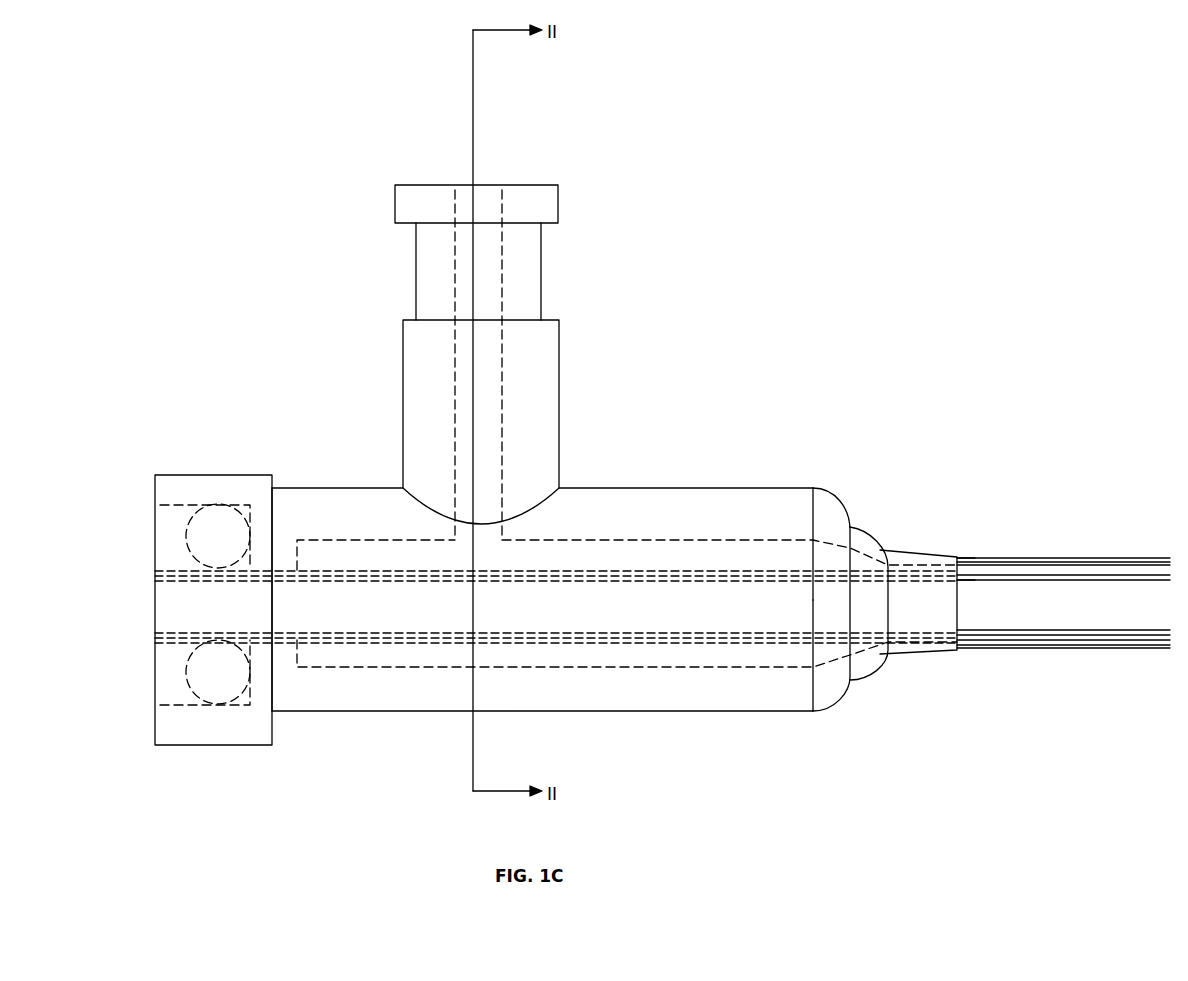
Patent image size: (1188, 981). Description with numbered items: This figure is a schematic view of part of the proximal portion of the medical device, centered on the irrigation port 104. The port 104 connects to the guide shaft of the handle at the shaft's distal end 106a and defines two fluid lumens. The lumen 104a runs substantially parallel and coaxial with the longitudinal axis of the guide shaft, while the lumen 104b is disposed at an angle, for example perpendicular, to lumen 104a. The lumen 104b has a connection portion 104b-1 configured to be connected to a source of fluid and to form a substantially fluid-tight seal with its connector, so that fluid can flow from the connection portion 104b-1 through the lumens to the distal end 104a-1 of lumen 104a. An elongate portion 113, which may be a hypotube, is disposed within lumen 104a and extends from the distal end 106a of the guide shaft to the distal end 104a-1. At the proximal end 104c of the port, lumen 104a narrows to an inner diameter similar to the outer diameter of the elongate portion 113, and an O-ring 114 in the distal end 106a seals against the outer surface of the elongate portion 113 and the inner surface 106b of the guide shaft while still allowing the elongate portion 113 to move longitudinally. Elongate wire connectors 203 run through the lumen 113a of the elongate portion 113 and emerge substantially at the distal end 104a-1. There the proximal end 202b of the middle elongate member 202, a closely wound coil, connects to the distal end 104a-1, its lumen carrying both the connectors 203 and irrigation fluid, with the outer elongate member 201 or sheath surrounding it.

The irrigation port 104 is at (664, 248).
The lumen 104a is at (657, 555).
The distal end 104a-1 is at (955, 572).
The lumen 104b is at (490, 378).
The connection portion 104b-1 is at (475, 205).
The proximal end 104c is at (279, 570).
The distal end 106a is at (175, 518).
The inner surface 106b is at (180, 704).
The elongate portion 113 is at (632, 640).
The lumen 113a is at (750, 607).
The O-ring 114 is at (228, 535).
The outer elongate member 201 is at (1105, 557).
The middle elongate member 202 is at (1097, 643).
The proximal end 202b is at (958, 567).
The elongate wire connectors 203 is at (295, 570).